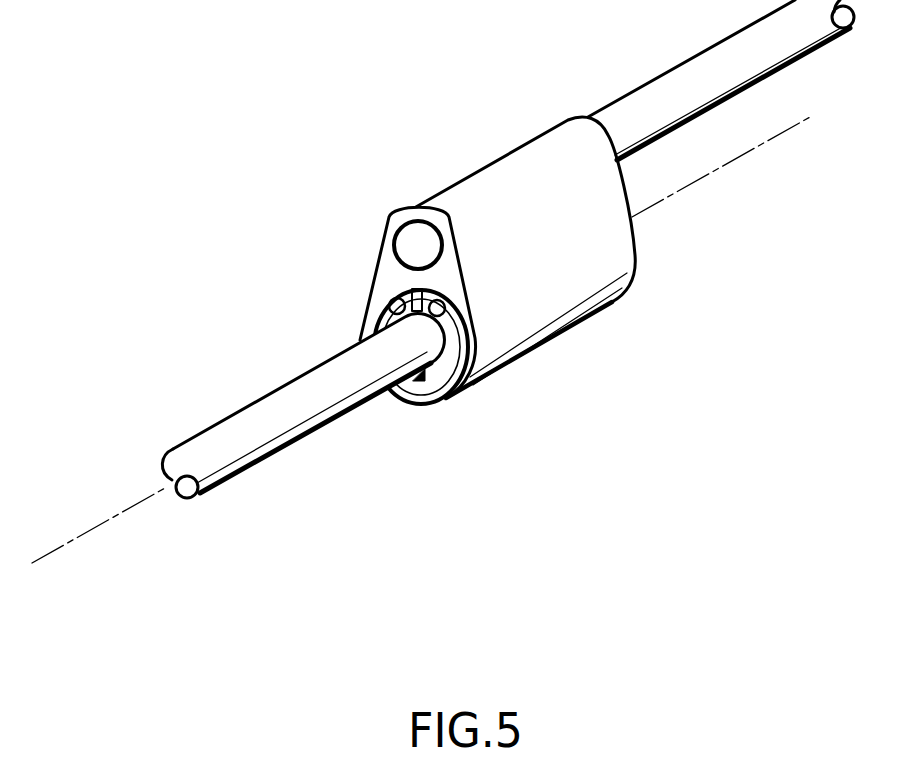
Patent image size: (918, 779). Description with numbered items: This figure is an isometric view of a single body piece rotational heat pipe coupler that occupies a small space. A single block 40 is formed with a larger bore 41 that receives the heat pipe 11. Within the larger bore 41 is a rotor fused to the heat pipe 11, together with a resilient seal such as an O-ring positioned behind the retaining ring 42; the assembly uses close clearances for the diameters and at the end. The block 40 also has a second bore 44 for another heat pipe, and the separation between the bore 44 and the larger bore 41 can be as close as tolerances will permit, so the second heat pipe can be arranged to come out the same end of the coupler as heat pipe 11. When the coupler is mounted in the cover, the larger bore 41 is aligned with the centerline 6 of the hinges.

The centerline 6 is at (48, 553).
The heat pipe 11 is at (275, 405).
The single block 40 is at (387, 273).
The larger bore 41 is at (385, 318).
The retaining ring 42 is at (437, 380).
The bore 44 is at (418, 238).